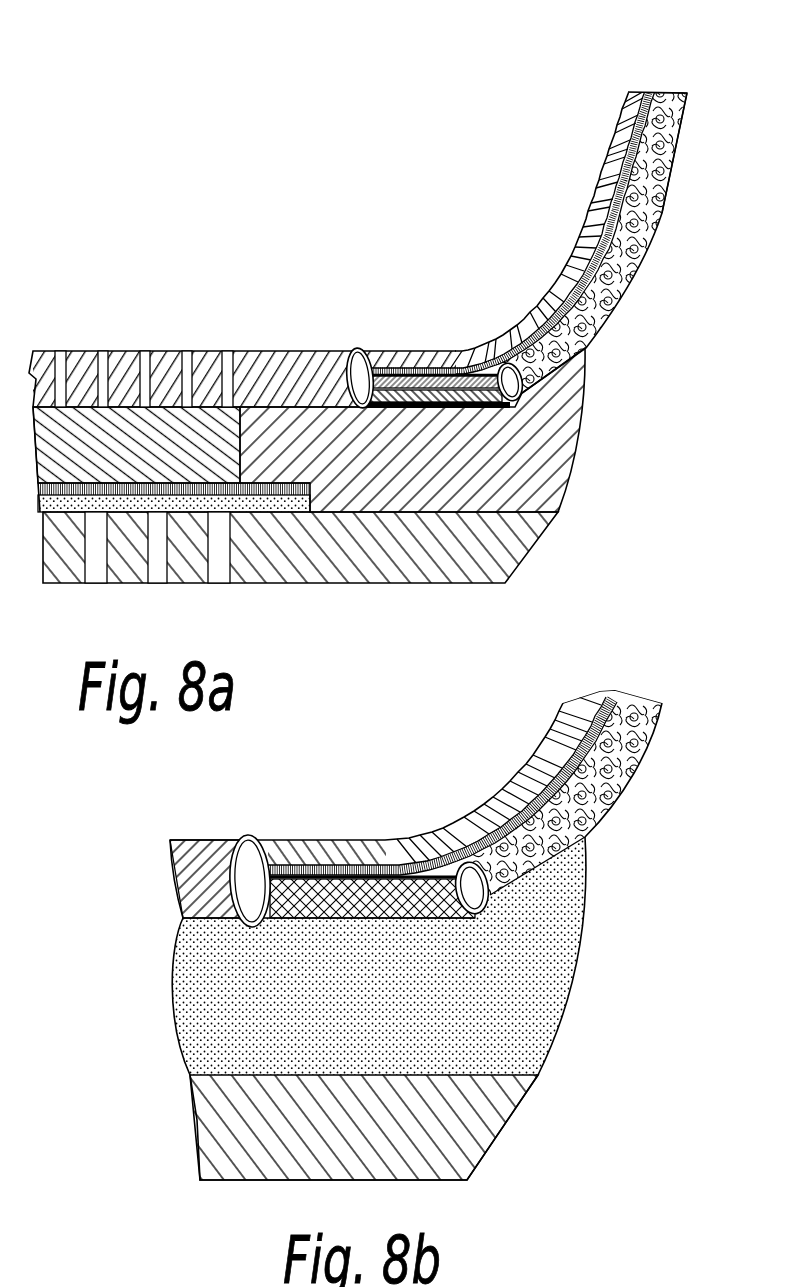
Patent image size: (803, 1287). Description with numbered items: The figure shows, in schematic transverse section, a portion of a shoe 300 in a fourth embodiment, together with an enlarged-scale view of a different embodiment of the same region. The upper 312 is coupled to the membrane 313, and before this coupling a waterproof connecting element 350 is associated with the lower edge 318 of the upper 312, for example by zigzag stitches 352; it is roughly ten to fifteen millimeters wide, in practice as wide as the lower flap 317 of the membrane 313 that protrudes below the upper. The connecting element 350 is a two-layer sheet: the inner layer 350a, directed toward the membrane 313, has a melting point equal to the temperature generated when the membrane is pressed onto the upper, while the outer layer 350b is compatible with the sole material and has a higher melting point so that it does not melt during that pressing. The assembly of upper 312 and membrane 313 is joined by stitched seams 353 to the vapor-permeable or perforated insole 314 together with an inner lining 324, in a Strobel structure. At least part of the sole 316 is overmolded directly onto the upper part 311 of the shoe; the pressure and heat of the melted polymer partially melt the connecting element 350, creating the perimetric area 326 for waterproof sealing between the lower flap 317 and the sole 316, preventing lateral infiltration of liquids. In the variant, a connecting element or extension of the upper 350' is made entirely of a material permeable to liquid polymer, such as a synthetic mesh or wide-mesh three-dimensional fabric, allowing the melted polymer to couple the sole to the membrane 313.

In FIG. 8A, the portion of a shoe 300 is at (200, 275).
In FIG. 8A, the upper part of the shoe 311 is at (688, 150).
In FIG. 8A, the upper 312 is at (668, 110).
In FIG. 8A, the membrane 313 is at (653, 93).
In FIG. 8B, the membrane 313 is at (580, 745).
In FIG. 8A, the vapor-permeable or perforated insole 314 is at (268, 367).
In FIG. 8A, the sole 316 is at (575, 517).
In FIG. 8B, the sole 316 is at (570, 1057).
In FIG. 8A, the lower flap of the membrane 317 is at (463, 367).
In FIG. 8A, the lower edge of the upper 318 is at (583, 319).
In FIG. 8A, the inner lining 324 is at (637, 92).
In FIG. 8A, the perimetric area for waterproof sealing 326 is at (433, 410).
In FIG. 8A, the waterproof connecting element 350 is at (491, 424).
In FIG. 8A, the inner layer of the connecting element 350a is at (402, 373).
In FIG. 8A, the outer layer of the connecting element 350b is at (407, 410).
In FIG. 8B, the connecting element or extension of the upper 350' is at (464, 948).
In FIG. 8A, the zigzag stitches 352 is at (528, 364).
In FIG. 8A, the stitched seams 353 is at (345, 357).